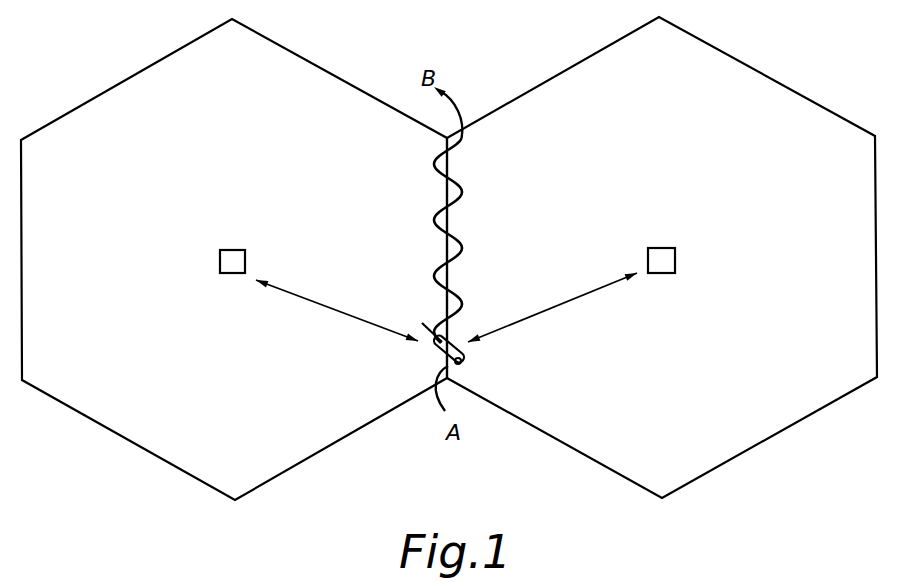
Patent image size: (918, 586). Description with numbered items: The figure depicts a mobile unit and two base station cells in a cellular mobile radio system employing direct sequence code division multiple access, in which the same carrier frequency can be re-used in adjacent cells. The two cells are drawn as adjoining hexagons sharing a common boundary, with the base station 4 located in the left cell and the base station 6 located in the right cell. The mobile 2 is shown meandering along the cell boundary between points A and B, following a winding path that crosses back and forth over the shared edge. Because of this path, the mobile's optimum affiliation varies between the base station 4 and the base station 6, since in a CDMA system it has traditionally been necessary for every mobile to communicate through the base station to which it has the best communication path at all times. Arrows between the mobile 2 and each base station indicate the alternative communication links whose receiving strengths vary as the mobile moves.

The mobile 2 is at (435, 350).
The base station 4 is at (232, 260).
The base station 6 is at (665, 258).